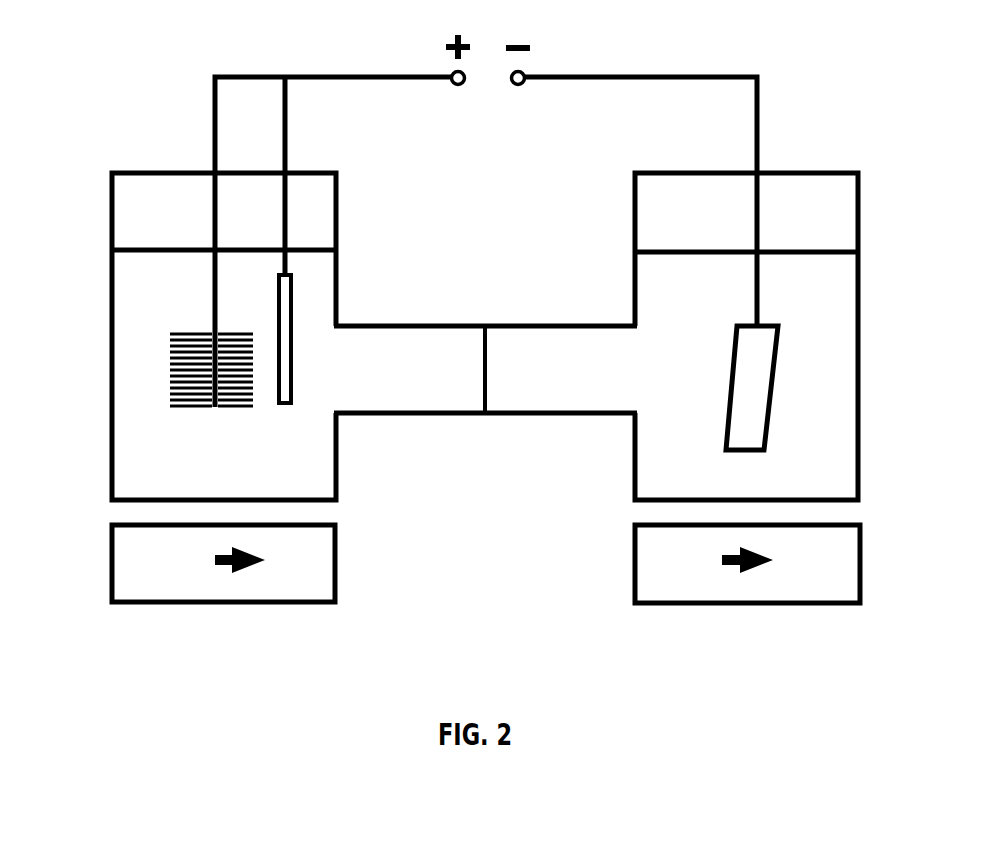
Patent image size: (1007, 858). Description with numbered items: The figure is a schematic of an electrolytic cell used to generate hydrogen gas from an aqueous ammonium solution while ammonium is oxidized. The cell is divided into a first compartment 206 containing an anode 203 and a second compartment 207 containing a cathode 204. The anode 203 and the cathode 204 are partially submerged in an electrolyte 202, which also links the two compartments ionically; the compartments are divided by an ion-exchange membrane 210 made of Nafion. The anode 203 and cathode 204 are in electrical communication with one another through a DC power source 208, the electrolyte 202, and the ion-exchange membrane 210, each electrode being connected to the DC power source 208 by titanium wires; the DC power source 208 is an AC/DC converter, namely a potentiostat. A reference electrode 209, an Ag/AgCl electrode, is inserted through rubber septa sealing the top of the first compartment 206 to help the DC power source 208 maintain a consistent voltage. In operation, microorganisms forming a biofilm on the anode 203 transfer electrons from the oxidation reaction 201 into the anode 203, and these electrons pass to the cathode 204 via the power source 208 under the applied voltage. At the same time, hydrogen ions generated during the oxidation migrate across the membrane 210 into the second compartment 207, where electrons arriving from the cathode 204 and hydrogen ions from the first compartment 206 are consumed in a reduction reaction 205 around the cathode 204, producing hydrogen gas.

The oxidation reaction 201 is at (223, 607).
The electrolyte 202 is at (617, 387).
The anode 203 is at (170, 333).
The cathode 204 is at (728, 390).
The reduction reaction 205 is at (753, 605).
The first compartment 206 is at (312, 218).
The second compartment 207 is at (658, 220).
The DC power source 208 is at (488, 43).
The reference electrode 209 is at (297, 338).
The ion-exchange membrane 210 is at (488, 368).